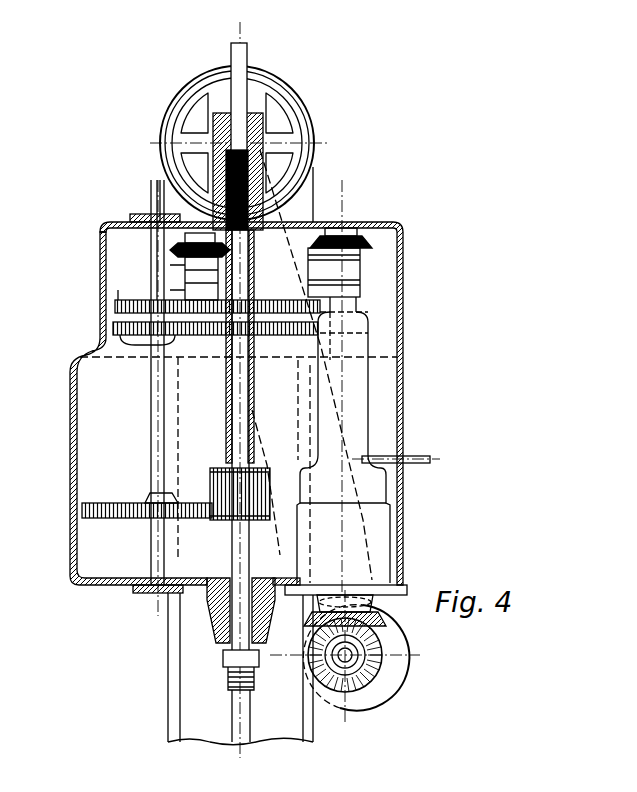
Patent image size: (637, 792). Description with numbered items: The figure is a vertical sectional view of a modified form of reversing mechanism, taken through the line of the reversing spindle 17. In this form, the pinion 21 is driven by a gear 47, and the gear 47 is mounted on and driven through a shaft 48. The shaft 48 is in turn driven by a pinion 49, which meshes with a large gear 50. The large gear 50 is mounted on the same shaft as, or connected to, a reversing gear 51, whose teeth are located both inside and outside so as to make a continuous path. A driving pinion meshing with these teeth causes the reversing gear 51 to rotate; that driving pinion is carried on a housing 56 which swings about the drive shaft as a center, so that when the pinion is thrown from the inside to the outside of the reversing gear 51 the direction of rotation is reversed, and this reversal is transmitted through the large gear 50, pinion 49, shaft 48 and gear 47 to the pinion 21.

The housing 56 is at (283, 284).
The reversing gear 51 is at (320, 283).
The large gear 50 is at (316, 332).
The pinion 49 is at (113, 331).
The shaft 48 is at (157, 403).
The pinion 21 is at (227, 478).
The gear 47 is at (125, 505).
The reversing spindle 17 is at (242, 620).